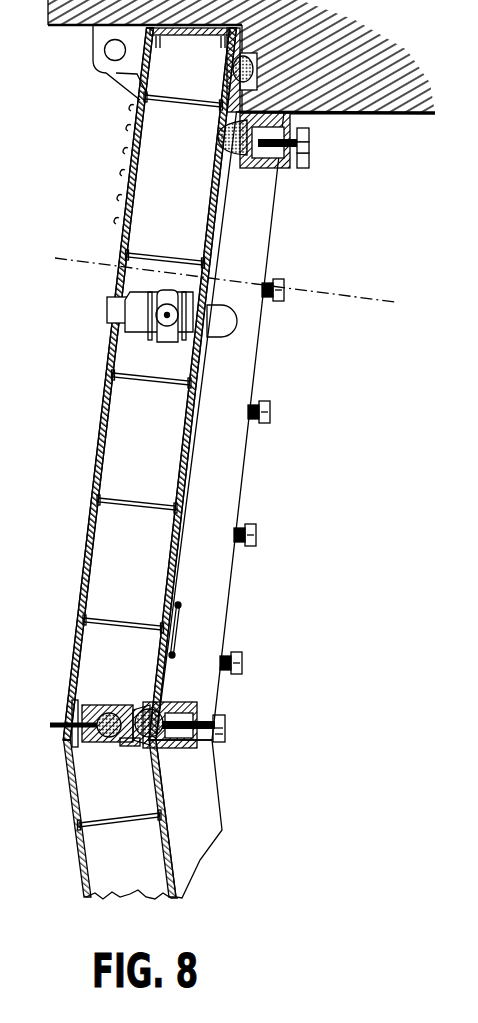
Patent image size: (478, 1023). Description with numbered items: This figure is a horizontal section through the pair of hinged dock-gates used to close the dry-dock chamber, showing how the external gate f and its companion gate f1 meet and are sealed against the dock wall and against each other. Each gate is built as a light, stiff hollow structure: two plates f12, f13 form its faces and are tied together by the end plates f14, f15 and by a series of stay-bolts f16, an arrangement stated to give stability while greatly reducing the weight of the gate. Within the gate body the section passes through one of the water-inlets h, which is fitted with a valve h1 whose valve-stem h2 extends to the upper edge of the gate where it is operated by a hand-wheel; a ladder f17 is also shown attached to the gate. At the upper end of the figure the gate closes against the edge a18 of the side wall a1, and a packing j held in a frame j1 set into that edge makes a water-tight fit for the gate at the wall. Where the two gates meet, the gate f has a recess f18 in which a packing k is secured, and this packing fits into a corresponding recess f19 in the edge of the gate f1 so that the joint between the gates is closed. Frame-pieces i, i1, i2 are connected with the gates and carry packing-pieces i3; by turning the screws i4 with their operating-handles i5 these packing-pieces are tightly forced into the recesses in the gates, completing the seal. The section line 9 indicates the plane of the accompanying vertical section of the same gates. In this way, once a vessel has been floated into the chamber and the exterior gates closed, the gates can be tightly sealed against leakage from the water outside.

The section line 9 is at (227, 270).
The packing j is at (312, 44).
The edges of the side walls a18 is at (245, 31).
The side wall a1 is at (400, 113).
The frame j1 is at (233, 70).
The dock-gate f is at (149, 384).
The end plate f14 is at (195, 70).
The stay-bolts f16 is at (165, 102).
The plate f12 is at (106, 421).
The plate f13 is at (187, 428).
The dock-gate f1 is at (111, 819).
The frame-piece i is at (242, 378).
The frame-piece i1 is at (262, 168).
The packing-pieces i3 is at (218, 136).
The screws i4 is at (310, 133).
The operating-handles i5 is at (310, 147).
The water-inlets h is at (107, 305).
The valves h1 is at (157, 335).
The valve-stems h2 is at (166, 320).
The ladder f17 is at (180, 622).
The packing k is at (110, 742).
The recess f18 is at (114, 690).
The frame-piece i2 is at (193, 693).
The end plate f15 is at (70, 727).
The recess f19 is at (125, 745).